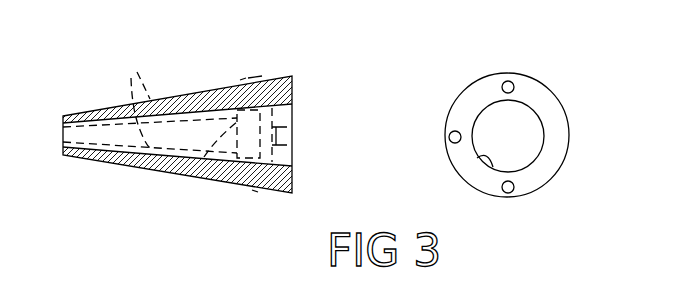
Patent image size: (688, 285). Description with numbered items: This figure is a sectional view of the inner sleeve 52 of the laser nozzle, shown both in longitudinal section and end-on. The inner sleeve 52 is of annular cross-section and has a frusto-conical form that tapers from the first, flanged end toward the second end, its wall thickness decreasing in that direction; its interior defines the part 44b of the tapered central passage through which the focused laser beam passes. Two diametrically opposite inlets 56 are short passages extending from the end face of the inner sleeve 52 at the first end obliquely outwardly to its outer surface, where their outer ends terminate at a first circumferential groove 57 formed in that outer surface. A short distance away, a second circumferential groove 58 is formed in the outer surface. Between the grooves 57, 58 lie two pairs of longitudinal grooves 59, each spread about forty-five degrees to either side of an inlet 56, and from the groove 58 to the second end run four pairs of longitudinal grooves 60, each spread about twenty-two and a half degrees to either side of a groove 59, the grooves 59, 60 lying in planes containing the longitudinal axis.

The inner sleeve 52 is at (120, 188).
The inlets 56 is at (295, 80).
The first circumferential groove 57 is at (255, 70).
The second circumferential groove 58 is at (204, 157).
The longitudinal grooves 59 is at (243, 77).
The longitudinal grooves 60 is at (131, 78).
The part of tapered central passage 44b is at (477, 158).